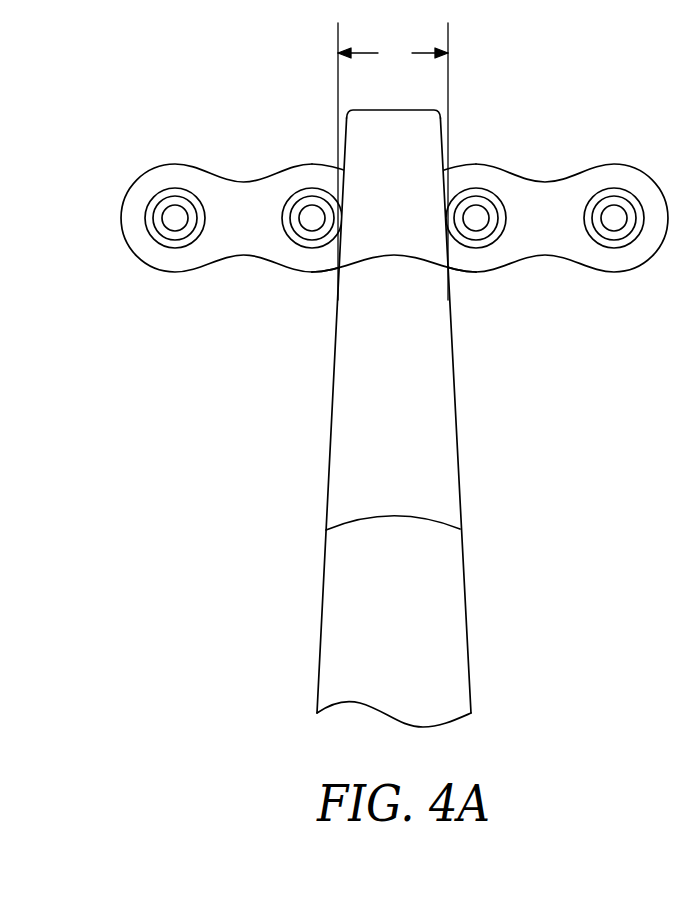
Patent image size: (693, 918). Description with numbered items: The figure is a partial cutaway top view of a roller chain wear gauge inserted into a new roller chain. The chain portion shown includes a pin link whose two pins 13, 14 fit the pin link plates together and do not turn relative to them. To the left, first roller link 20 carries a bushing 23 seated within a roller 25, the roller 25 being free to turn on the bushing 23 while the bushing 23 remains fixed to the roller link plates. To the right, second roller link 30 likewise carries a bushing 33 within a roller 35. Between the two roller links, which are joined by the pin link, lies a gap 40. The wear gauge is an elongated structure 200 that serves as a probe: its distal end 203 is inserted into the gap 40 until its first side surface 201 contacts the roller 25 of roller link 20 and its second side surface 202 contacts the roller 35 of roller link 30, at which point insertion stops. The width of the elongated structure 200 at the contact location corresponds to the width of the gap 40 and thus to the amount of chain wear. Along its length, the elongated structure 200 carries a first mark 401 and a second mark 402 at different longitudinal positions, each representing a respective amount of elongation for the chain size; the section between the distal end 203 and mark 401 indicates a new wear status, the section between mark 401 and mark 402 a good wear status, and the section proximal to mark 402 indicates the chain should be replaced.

The pin 13 is at (310, 206).
The pin 14 is at (476, 205).
The first roller link 20 is at (169, 165).
The bushing 23 is at (312, 240).
The roller 25 is at (297, 193).
The second roller link 30 is at (625, 165).
The bushing 33 is at (477, 240).
The roller 35 is at (497, 197).
The gap 40 is at (393, 161).
The elongated structure 200 is at (248, 380).
The first side surface 201 is at (330, 443).
The second side surface 202 is at (458, 422).
The distal end 203 is at (373, 110).
The first mark 401 is at (408, 257).
The second mark 402 is at (368, 517).